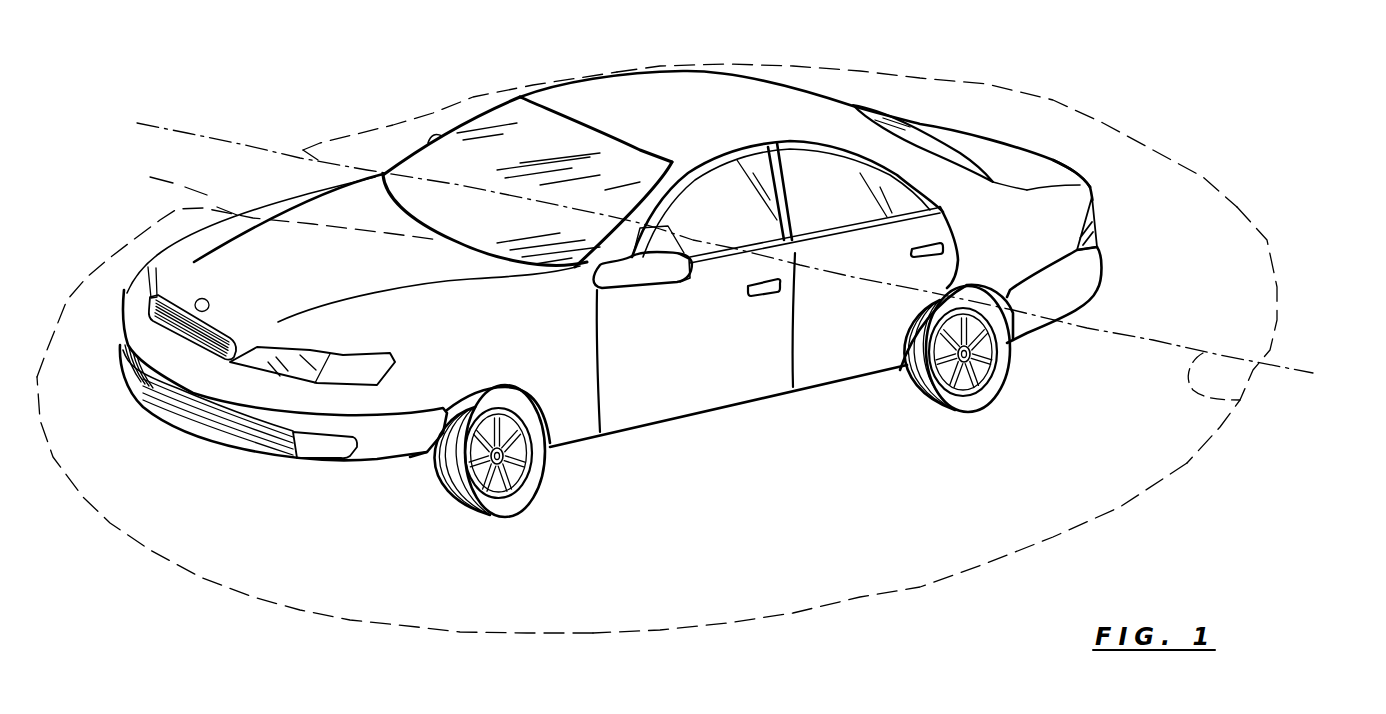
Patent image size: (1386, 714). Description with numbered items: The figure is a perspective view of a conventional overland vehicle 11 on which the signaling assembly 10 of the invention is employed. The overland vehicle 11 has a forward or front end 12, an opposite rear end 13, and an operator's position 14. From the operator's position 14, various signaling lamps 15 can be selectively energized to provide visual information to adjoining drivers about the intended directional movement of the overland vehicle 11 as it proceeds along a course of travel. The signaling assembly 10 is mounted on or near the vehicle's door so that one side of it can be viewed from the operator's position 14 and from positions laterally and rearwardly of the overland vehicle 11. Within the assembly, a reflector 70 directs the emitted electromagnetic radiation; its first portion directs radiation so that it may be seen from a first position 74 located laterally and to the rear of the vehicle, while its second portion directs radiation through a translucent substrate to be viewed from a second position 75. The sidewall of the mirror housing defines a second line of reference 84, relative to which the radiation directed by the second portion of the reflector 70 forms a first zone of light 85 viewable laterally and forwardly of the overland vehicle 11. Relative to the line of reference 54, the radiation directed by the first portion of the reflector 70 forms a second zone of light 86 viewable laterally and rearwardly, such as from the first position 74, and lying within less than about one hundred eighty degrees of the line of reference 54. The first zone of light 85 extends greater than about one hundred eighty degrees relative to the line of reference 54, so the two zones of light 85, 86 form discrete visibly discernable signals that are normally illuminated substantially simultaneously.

The signaling assembly 10 is at (683, 288).
The overland vehicle 11 is at (773, 395).
The front end 12 is at (223, 315).
The rear end 13 is at (1020, 160).
The operator's position 14 is at (470, 212).
The signaling lamps 15 is at (367, 372).
The line of reference 54 is at (243, 147).
The reflector 70 is at (720, 373).
The first position 74 is at (1012, 112).
The second position 75 is at (970, 543).
The second line of reference 84 is at (140, 174).
The first zone of light 85 is at (353, 587).
The second zone of light 86 is at (1220, 240).